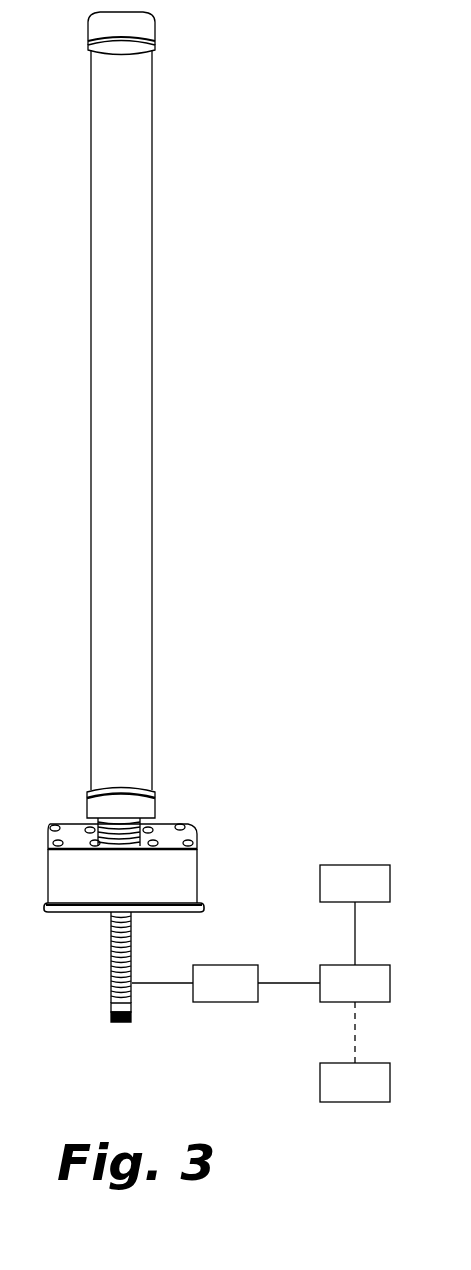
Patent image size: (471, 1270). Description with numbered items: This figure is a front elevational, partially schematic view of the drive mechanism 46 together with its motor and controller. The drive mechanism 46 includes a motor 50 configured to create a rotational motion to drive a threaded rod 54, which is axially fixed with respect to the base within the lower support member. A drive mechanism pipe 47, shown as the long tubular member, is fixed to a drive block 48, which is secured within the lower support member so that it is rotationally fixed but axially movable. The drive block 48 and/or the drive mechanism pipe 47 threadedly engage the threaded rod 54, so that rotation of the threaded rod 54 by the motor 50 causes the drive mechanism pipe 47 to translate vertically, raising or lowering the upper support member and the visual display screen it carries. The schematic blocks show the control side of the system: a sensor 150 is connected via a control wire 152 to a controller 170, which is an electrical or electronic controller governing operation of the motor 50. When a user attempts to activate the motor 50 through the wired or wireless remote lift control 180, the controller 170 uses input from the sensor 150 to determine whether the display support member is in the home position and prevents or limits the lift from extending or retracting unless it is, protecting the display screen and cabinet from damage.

The drive mechanism 46 is at (188, 374).
The drive mechanism pipe 47 is at (108, 188).
The drive block 48 is at (180, 882).
The threaded rod 54 is at (110, 958).
The motor 50 is at (226, 983).
The sensor 150 is at (355, 883).
The control wire 152 is at (357, 940).
The controller 170 is at (355, 1014).
The lift control 180 is at (355, 1082).